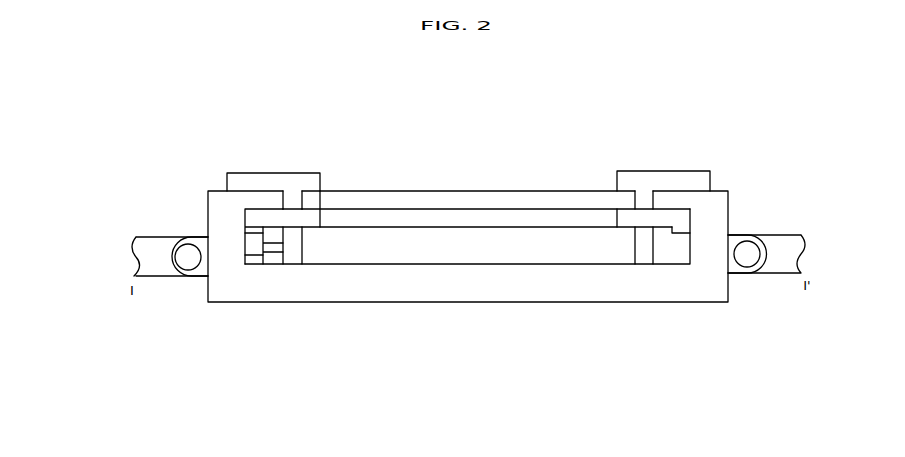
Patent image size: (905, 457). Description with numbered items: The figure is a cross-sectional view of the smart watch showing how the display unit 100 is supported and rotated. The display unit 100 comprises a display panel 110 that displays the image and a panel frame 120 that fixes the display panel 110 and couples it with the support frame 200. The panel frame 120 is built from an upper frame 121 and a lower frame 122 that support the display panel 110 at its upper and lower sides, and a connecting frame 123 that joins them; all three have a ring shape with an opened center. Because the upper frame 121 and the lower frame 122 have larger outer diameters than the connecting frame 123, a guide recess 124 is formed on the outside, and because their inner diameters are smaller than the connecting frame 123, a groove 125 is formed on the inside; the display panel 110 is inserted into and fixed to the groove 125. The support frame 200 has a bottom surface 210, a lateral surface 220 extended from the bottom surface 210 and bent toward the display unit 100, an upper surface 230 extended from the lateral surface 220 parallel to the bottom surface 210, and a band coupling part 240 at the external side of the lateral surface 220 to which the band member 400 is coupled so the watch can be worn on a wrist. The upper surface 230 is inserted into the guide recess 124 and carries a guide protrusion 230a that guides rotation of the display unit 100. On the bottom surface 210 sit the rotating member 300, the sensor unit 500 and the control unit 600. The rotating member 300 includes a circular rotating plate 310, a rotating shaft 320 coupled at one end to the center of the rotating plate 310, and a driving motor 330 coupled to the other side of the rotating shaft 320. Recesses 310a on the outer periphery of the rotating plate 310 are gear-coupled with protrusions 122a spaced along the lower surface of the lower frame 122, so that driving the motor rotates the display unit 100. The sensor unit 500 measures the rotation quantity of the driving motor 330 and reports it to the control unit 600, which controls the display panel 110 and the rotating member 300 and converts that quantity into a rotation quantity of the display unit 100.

The display unit 100 is at (282, 91).
The display panel 110 is at (398, 205).
The panel frame 120 is at (248, 117).
The upper frame 121 is at (257, 178).
The lower frame 122 is at (312, 220).
The protrusions 122a is at (255, 232).
The connecting frame 123 is at (291, 190).
The guide recess 124 is at (257, 201).
The groove 125 is at (318, 203).
The support frame 200 is at (590, 117).
The bottom surface 210 is at (593, 278).
The lateral surface 220 is at (712, 243).
The upper surface 230 is at (667, 198).
The guide protrusion 230a is at (675, 199).
The band coupling part 240 is at (187, 258).
The rotating member 300 is at (325, 347).
The rotating plate 310 is at (255, 263).
The recesses 310a is at (181, 206).
The rotating shaft 320 is at (275, 248).
The driving motor 330 is at (293, 247).
The band member 400 is at (777, 262).
The sensor unit 500 is at (645, 248).
The control unit 600 is at (445, 247).